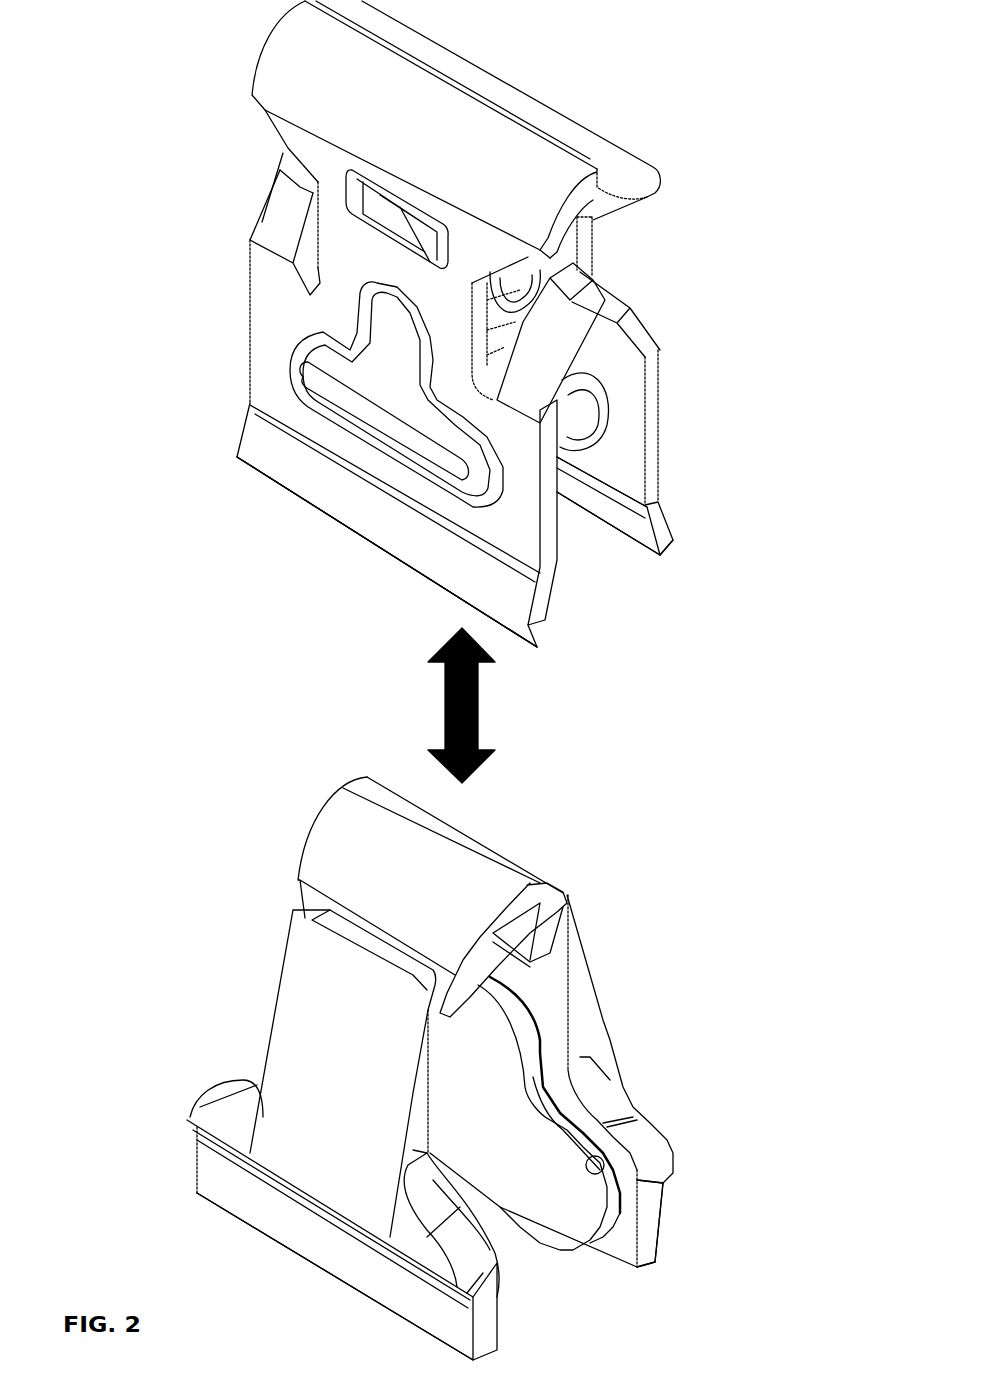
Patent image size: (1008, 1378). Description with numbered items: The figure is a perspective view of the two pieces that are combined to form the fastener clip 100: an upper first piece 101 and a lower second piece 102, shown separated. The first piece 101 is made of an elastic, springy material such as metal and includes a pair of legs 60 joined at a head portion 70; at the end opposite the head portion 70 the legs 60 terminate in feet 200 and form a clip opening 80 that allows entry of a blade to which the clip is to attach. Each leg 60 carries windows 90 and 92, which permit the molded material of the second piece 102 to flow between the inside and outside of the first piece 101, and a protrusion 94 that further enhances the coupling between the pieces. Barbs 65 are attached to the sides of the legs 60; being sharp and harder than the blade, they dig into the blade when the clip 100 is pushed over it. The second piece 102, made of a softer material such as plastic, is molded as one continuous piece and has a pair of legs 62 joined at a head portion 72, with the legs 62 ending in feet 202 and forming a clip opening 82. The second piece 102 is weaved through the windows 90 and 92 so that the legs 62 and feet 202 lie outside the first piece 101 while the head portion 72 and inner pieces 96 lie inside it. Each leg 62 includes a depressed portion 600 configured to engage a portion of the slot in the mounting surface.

The fastener clip 100 is at (812, 125).
The first piece 101 is at (147, 196).
The second piece 102 is at (192, 919).
The head portion 70 is at (531, 127).
The head portion 72 is at (482, 863).
The barbs 65 is at (290, 200).
The legs 60 is at (270, 308).
The legs 62 is at (313, 1040).
The window 90 is at (380, 228).
The window 92 is at (348, 402).
The protrusion 94 is at (308, 358).
The inner pieces 96 is at (486, 1077).
The feet 200 is at (285, 463).
The feet 202 is at (252, 1210).
The clip opening 80 is at (582, 540).
The clip opening 82 is at (560, 1283).
The depressed portion 600 is at (497, 590).